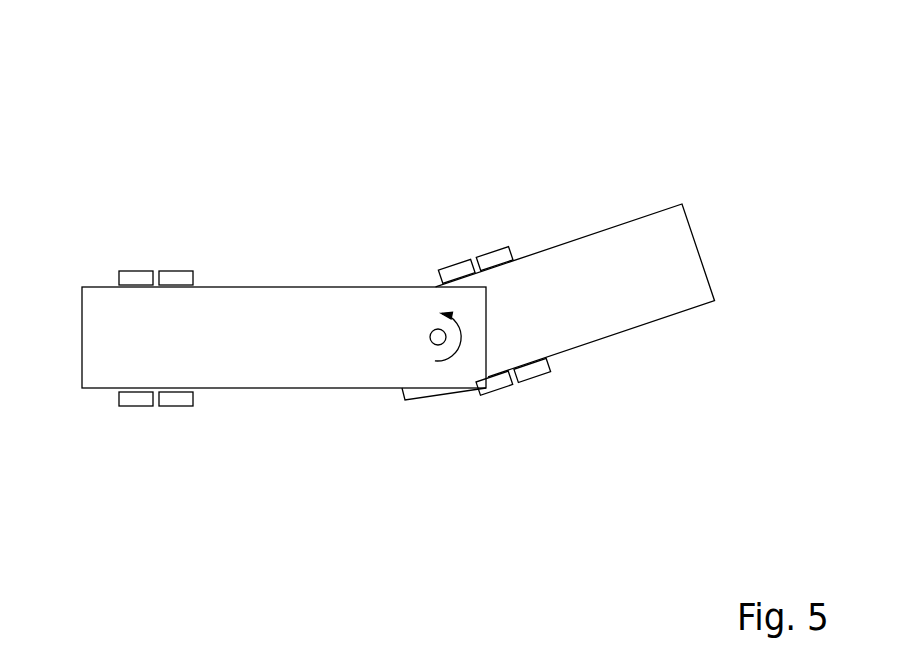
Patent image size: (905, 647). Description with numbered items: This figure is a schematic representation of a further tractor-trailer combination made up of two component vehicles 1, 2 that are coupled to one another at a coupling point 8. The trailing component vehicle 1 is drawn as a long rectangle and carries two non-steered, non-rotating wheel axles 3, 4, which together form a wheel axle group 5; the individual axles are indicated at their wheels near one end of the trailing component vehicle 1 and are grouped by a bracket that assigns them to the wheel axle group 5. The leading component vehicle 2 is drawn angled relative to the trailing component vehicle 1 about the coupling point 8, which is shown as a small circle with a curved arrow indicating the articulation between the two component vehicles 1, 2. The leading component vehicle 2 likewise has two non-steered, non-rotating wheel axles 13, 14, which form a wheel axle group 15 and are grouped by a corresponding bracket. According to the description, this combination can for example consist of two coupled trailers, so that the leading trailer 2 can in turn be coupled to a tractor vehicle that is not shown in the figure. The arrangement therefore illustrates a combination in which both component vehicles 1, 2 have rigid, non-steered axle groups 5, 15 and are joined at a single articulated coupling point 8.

The trailing component vehicle 1 is at (285, 315).
The leading component vehicle 2 is at (634, 258).
The wheel axle 3 is at (136, 259).
The wheel axle 4 is at (176, 259).
The wheel axle group 5 is at (193, 116).
The coupling point 8 is at (432, 344).
The wheel axle 13 is at (450, 252).
The wheel axle 14 is at (488, 240).
The wheel axle group 15 is at (497, 116).